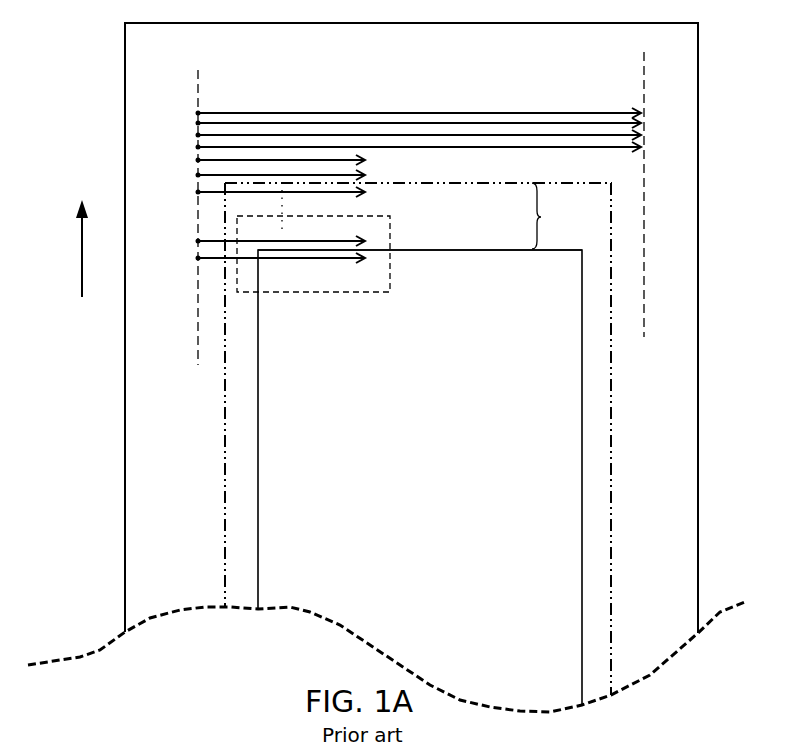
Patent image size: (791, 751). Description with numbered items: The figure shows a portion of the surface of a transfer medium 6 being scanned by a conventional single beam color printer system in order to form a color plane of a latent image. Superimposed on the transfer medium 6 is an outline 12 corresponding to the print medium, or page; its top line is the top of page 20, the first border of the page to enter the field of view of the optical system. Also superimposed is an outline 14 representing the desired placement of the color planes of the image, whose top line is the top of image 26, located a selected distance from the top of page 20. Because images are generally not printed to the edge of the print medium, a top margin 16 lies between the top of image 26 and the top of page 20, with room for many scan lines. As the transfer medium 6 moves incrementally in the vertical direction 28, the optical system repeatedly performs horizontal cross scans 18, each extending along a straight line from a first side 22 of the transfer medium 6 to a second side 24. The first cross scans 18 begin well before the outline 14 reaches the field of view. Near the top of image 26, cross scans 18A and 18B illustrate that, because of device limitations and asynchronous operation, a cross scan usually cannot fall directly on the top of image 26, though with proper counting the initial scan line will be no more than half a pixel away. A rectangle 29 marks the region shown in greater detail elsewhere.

The transfer medium 6 is at (698, 320).
The outline 12 is at (611, 473).
The outline 14 is at (582, 538).
The top margin 16 is at (554, 216).
The cross scans 18 is at (173, 110).
The cross scan 18A is at (222, 242).
The cross scan 18B is at (222, 257).
The top of page 20 is at (491, 183).
The first side 22 is at (198, 87).
The second side 24 is at (644, 87).
The top of image 26 is at (415, 249).
The vertical direction 28 is at (80, 247).
The rectangle 29 is at (333, 292).